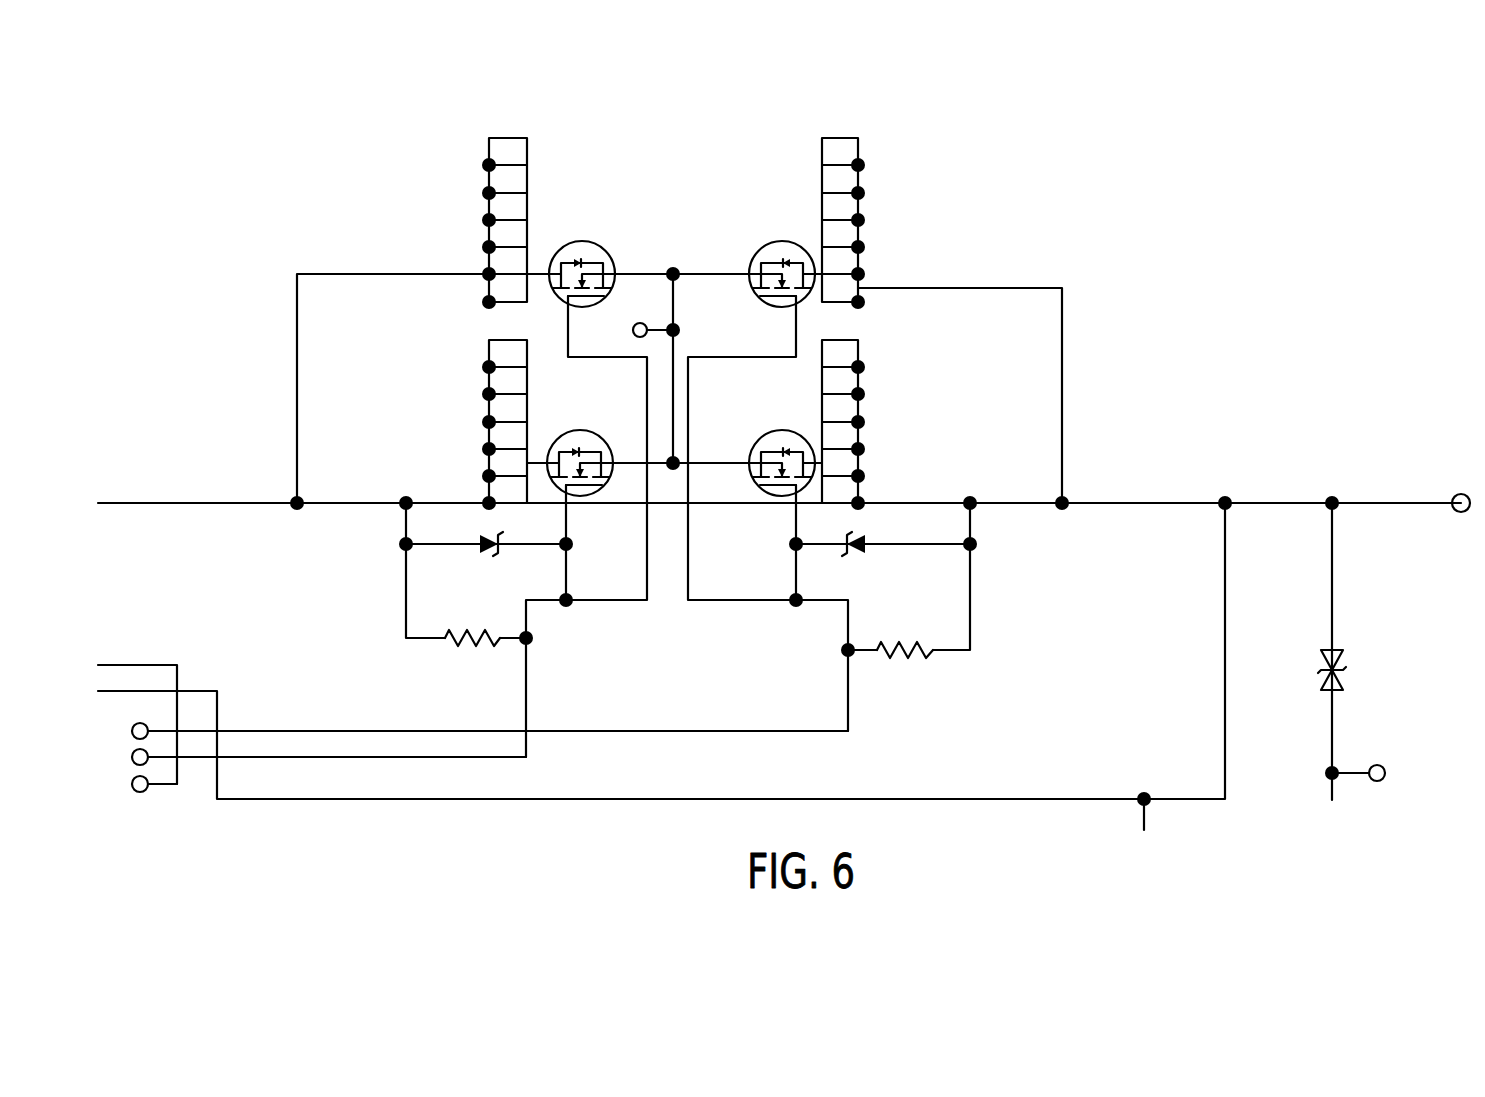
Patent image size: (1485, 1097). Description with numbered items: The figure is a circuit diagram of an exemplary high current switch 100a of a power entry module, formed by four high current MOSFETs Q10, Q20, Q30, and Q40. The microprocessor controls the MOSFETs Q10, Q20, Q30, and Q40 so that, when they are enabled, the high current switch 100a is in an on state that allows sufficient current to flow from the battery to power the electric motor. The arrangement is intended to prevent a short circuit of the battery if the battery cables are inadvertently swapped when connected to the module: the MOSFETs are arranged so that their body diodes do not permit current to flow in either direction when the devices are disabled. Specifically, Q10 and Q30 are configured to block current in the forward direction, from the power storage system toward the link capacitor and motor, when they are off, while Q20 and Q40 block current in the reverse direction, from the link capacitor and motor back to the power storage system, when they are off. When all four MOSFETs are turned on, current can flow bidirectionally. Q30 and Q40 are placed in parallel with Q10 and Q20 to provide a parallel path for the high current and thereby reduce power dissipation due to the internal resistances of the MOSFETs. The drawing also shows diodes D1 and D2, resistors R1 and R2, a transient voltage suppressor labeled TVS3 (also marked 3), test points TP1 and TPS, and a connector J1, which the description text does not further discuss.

The high current switch 100a is at (1099, 196).
The MOSFET Q40 is at (582, 275).
The MOSFET Q30 is at (782, 275).
The MOSFET Q20 is at (580, 462).
The MOSFET Q10 is at (782, 461).
The diode D1 is at (489, 552).
The diode D2 is at (853, 552).
The resistor R1 is at (905, 637).
The resistor R2 is at (472, 624).
The transient voltage suppressor 3 is at (1370, 669).
The transient voltage suppressor TVS3 is at (1370, 669).
The test point TP1 is at (619, 330).
The test point TPS is at (1401, 774).
The connector J1 is at (137, 751).